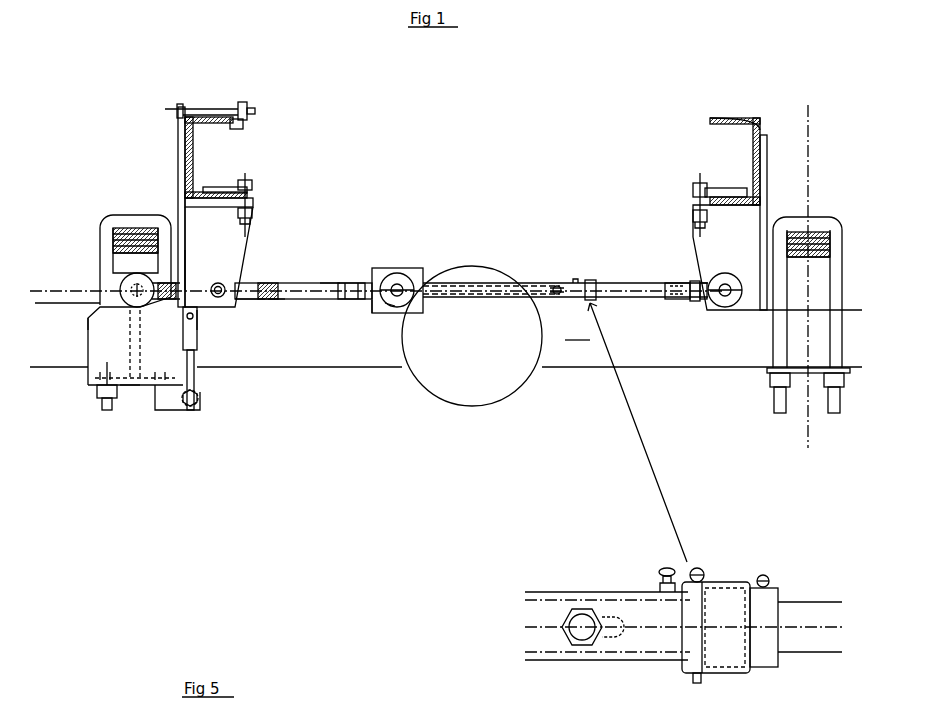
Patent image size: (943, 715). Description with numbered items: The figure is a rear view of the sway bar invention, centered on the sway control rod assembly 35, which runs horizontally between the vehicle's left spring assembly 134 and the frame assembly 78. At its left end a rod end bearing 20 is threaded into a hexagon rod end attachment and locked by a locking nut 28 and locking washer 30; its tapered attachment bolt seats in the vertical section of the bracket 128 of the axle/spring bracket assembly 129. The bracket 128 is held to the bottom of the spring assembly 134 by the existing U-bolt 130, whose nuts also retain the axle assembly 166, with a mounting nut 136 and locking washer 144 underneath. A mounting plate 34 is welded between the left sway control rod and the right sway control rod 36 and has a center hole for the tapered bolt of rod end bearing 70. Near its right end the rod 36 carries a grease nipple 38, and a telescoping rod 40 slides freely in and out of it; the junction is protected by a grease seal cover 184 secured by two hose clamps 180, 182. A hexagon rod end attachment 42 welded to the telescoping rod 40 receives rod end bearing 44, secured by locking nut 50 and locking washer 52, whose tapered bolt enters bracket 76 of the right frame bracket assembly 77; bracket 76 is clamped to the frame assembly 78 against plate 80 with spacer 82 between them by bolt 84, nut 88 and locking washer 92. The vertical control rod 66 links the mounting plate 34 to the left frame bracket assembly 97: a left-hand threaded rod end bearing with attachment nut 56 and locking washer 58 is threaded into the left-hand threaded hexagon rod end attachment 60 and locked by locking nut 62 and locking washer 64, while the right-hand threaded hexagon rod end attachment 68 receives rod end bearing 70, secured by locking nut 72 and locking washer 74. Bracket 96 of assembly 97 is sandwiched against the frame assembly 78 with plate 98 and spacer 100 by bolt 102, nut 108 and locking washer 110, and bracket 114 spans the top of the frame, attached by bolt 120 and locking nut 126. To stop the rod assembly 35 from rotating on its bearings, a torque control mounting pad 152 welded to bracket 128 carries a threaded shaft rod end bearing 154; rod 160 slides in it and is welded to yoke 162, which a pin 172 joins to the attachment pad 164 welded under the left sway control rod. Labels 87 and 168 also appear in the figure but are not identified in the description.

In FIG. 1, the rod end bearing 20 is at (126, 290).
In FIG. 1, the locking nut 28 is at (88, 321).
In FIG. 1, the locking washer 30 is at (186, 268).
In FIG. 1, the mounting plate 34 is at (401, 274).
In FIG. 1, the sway control rod assembly 35 is at (453, 267).
In FIG. 1, the right sway control rod 36 is at (522, 283).
In FIG. 1, the grease nipple 38 is at (562, 285).
In FIG. 5, the grease nipple 38 is at (660, 574).
In FIG. 1, the telescoping rod 40 is at (591, 280).
In FIG. 5, the telescoping rod 40 is at (805, 632).
In FIG. 1, the hexagon rod end attachment 42 is at (672, 300).
In FIG. 1, the rod end bearing 44 is at (725, 308).
In FIG. 1, the locking nut 50 is at (704, 302).
In FIG. 1, the locking washer 52 is at (692, 302).
In FIG. 1, the attachment nut 56 is at (237, 300).
In FIG. 1, the locking washer 58 is at (222, 282).
In FIG. 1, the left-hand threaded hexagon rod end attachment 60 is at (274, 300).
In FIG. 1, the left-hand threaded locking nut 62 is at (258, 300).
In FIG. 1, the locking washer 64 is at (270, 283).
In FIG. 1, the vertical control rod 66 is at (313, 300).
In FIG. 1, the right-hand threaded hexagon rod end attachment 68 is at (344, 283).
In FIG. 1, the rod end bearing 70 is at (397, 313).
In FIG. 1, the locking nut 72 is at (387, 268).
In FIG. 1, the locking washer 74 is at (381, 313).
In FIG. 1, the bracket 76 is at (740, 245).
In FIG. 1, the right frame bracket assembly 77 is at (767, 159).
In FIG. 1, the frame assembly 78 is at (186, 152).
In FIG. 1, the plate 80 is at (720, 188).
In FIG. 1, the spacer 82 is at (693, 196).
In FIG. 1, the bolt 84 is at (699, 180).
In FIG. 1, the rod 87 is at (328, 283).
In FIG. 1, the nut 88 is at (700, 232).
In FIG. 1, the locking washer 92 is at (693, 216).
In FIG. 1, the bracket 96 is at (242, 262).
In FIG. 1, the left frame bracket assembly 97 is at (178, 186).
In FIG. 1, the plate 98 is at (222, 189).
In FIG. 1, the spacer 100 is at (255, 200).
In FIG. 1, the bolt 102 is at (252, 185).
In FIG. 1, the nut 108 is at (250, 224).
In FIG. 1, the locking washer 110 is at (253, 214).
In FIG. 1, the bracket 114 is at (245, 122).
In FIG. 1, the bolt 120 is at (214, 107).
In FIG. 1, the locking nut 126 is at (250, 103).
In FIG. 1, the bracket 128 is at (88, 376).
In FIG. 1, the axle/spring bracket assembly 129 is at (128, 386).
In FIG. 1, the U-bolt 130 is at (138, 215).
In FIG. 1, the left side spring assembly 134 is at (123, 238).
In FIG. 1, the mounting nut 136 is at (105, 410).
In FIG. 1, the locking washer 144 is at (97, 393).
In FIG. 1, the torque control assembly mounting pad 152 is at (164, 400).
In FIG. 1, the threaded shaft rod end bearing 154 is at (195, 395).
In FIG. 1, the rod 160 is at (202, 398).
In FIG. 1, the yoke 162 is at (196, 330).
In FIG. 1, the attachment pad 164 is at (205, 312).
In FIG. 1, the axle assembly 166 is at (586, 343).
In FIG. 1, the mark 168 is at (574, 280).
In FIG. 1, the pin 172 is at (187, 319).
In FIG. 5, the hose clamp 180 is at (698, 568).
In FIG. 5, the hose clamp 182 is at (776, 590).
In FIG. 5, the grease seal cover 184 is at (730, 592).